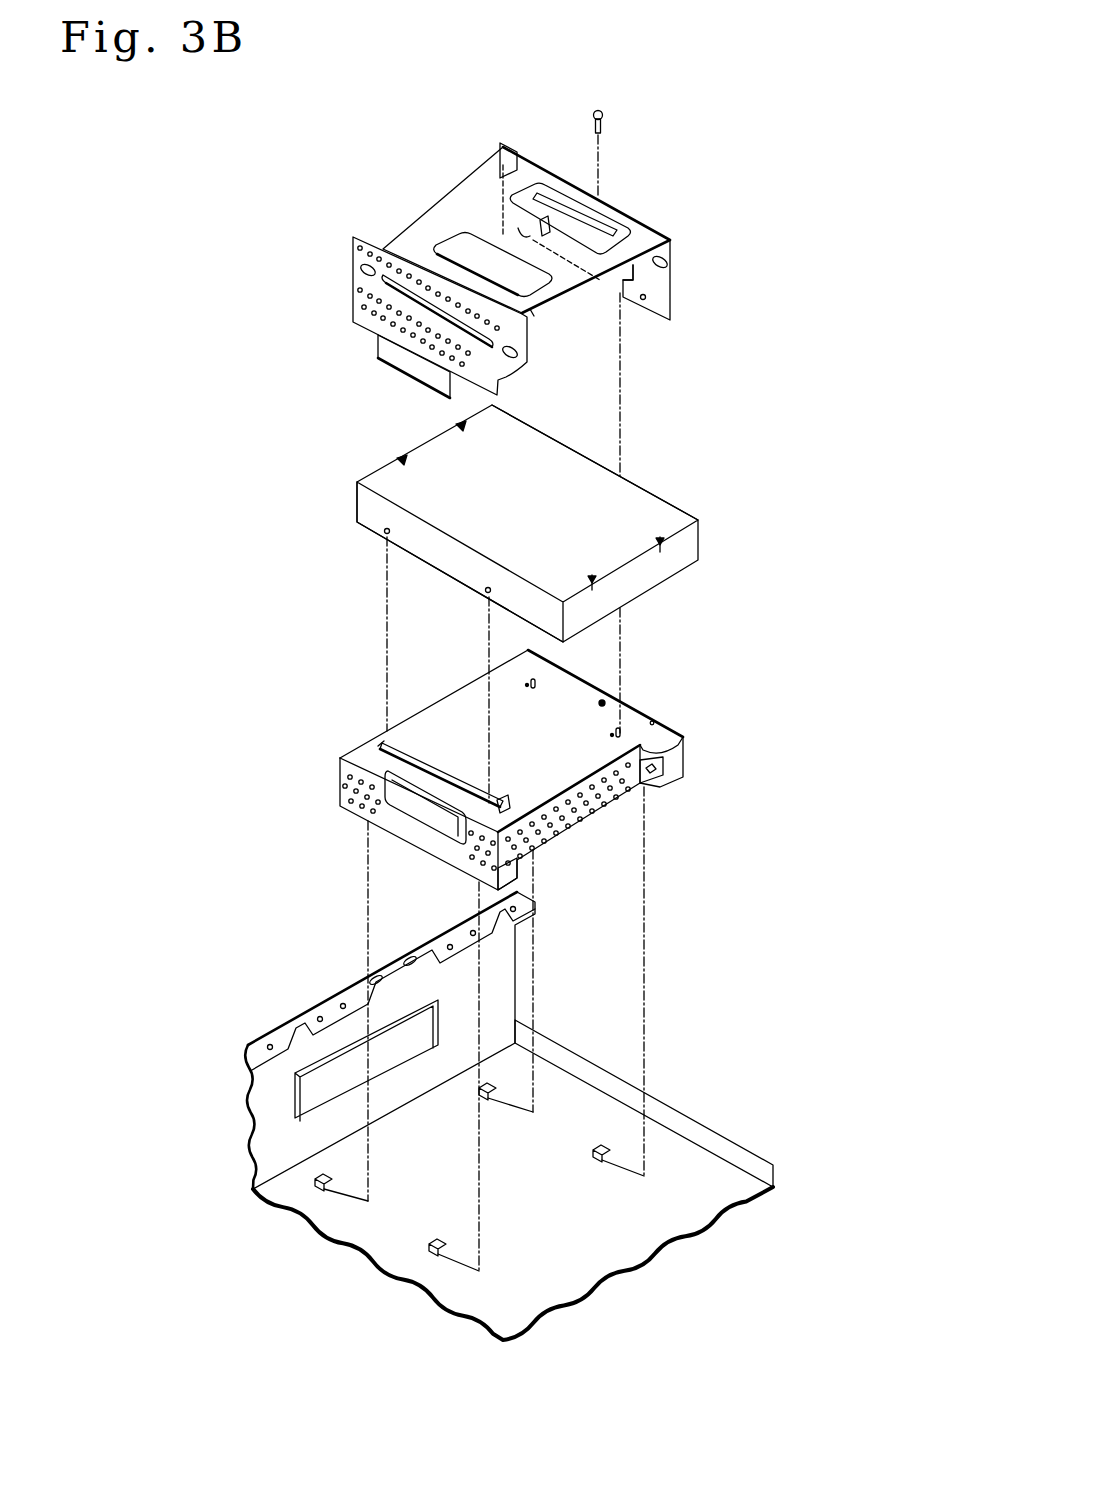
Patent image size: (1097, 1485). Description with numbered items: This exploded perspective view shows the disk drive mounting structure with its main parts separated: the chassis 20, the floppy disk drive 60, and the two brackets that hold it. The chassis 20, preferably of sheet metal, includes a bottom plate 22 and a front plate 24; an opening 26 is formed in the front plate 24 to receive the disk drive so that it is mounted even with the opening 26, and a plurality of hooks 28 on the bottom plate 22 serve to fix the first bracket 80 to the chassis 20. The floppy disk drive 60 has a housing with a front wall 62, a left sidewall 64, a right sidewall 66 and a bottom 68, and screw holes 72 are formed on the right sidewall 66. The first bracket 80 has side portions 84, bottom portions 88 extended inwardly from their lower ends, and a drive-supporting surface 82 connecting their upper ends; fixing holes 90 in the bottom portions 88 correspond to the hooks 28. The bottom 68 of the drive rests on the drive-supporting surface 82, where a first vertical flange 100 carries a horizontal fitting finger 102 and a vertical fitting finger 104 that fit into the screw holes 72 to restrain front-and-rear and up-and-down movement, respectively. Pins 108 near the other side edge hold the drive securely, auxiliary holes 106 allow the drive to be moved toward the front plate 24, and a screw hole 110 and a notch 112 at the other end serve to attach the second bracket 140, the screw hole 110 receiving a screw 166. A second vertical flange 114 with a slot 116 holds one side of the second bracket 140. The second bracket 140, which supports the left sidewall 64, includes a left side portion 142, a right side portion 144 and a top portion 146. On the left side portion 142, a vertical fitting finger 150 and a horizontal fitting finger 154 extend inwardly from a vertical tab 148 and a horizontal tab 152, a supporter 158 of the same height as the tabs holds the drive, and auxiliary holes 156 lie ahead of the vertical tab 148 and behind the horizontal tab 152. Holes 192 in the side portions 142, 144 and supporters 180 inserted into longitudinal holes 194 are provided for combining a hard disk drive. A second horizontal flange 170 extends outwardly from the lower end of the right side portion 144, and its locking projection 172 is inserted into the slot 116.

The chassis 20 is at (484, 1116).
The bottom plate 22 is at (389, 1242).
The front plate 24 is at (276, 1118).
The opening 26 is at (334, 1077).
The hooks 28 is at (334, 1180).
The floppy disk drive 60 is at (517, 598).
The front wall 62 is at (403, 455).
The left sidewall 64 is at (663, 500).
The right sidewall 66 is at (367, 503).
The bottom 68 is at (647, 597).
The screw holes 72 is at (385, 537).
The first bracket 80 is at (538, 960).
The drive-supporting surface 82 is at (470, 703).
The side portions 84 is at (347, 773).
The bottom portions 88 is at (678, 778).
The fixing holes 90 is at (655, 777).
The first vertical flange 100 is at (430, 778).
The horizontal fitting finger 102 is at (495, 802).
The vertical fitting finger 104 is at (383, 743).
The auxiliary holes 106 is at (527, 688).
The pins 108 is at (612, 734).
The screw hole 110 is at (604, 702).
The notch 112 is at (653, 722).
The second vertical flange 114 is at (412, 802).
The slot 116 is at (438, 813).
The second bracket 140 is at (516, 239).
The left side portion 142 is at (508, 160).
The right side portion 144 is at (363, 247).
The top portion 146 is at (477, 212).
The vertical tab 148 is at (525, 228).
The vertical fitting finger 150 is at (522, 233).
The horizontal tab 152 is at (628, 305).
The horizontal fitting finger 154 is at (623, 293).
The auxiliary holes 156 is at (645, 300).
The supporter 158 is at (563, 232).
The screw 166 is at (600, 111).
The second horizontal flange 170 is at (382, 347).
The locking projection 172 is at (400, 373).
The supporters 180 is at (547, 200).
The holes 192 is at (362, 270).
The longitudinal holes 194 is at (528, 315).